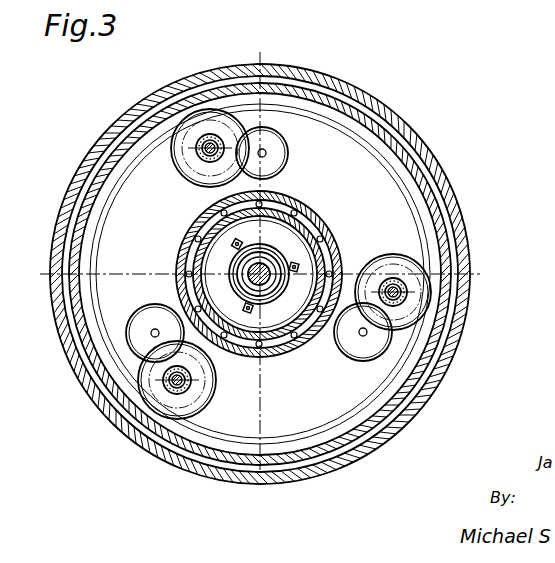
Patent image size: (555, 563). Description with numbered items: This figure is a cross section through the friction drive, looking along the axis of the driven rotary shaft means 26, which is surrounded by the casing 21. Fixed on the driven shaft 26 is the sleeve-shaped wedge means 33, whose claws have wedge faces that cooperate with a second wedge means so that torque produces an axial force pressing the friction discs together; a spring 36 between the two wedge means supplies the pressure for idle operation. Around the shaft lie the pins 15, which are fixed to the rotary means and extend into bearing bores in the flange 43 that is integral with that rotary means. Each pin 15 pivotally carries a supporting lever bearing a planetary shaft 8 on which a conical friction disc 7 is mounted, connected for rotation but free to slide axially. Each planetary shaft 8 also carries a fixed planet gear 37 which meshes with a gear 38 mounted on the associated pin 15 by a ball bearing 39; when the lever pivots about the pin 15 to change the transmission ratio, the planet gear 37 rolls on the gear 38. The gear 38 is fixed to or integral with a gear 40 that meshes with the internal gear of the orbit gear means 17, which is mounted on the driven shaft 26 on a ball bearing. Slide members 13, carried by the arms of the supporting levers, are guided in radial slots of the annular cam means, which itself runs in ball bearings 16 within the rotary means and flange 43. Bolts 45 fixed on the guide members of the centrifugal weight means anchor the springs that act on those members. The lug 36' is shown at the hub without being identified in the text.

The conical friction disc 7 is at (150, 311).
The planetary shaft 8 is at (366, 335).
The slide member 13 is at (232, 244).
The pin 15 is at (405, 291).
The ball bearing 16 is at (295, 213).
The orbit gear means 17 is at (102, 172).
The casing 21 is at (118, 117).
The driven rotary shaft means 26 is at (272, 303).
The sleeve-shaped wedge means 33 is at (233, 263).
The spring 36 is at (270, 301).
The lug 36' is at (265, 268).
The planet gear 37 is at (145, 342).
The gear 38 is at (120, 427).
The ball bearing 39 is at (407, 288).
The gear 40 is at (140, 381).
The flange 43 is at (340, 242).
The bolt 45 is at (210, 93).